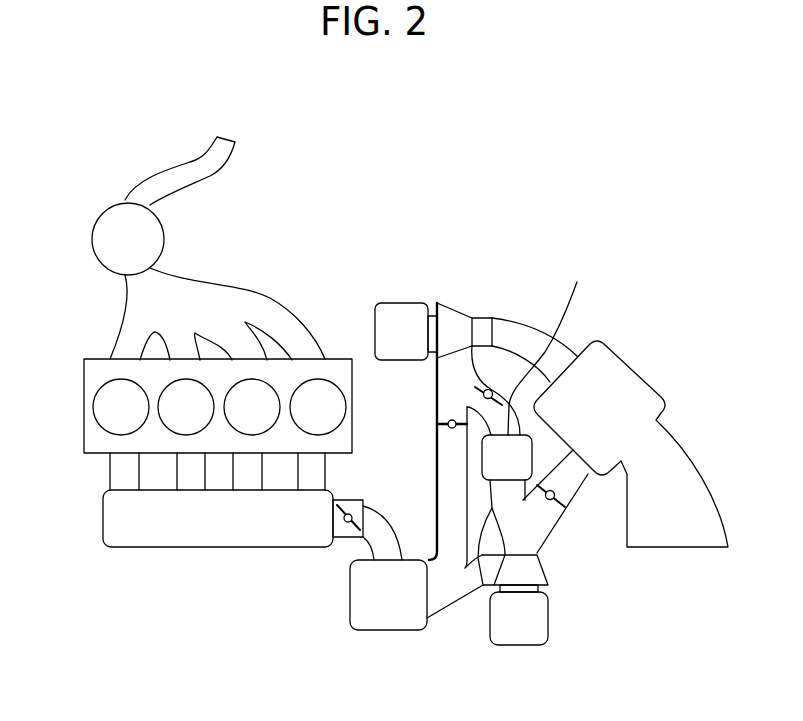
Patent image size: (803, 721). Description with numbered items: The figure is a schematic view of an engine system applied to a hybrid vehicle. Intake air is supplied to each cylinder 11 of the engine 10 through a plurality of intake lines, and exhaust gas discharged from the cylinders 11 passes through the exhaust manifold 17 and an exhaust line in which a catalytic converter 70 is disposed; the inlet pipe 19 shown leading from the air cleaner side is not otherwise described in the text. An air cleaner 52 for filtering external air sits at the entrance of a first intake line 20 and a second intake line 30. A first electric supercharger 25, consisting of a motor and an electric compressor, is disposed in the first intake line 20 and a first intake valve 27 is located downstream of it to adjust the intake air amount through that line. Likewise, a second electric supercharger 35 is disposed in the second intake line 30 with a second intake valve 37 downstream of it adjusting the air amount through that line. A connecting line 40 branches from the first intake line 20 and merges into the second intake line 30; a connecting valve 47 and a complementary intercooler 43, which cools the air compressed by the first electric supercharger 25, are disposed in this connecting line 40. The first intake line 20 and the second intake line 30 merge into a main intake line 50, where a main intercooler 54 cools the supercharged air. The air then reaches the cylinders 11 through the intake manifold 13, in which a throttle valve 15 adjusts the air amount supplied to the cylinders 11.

The engine 10 is at (79, 442).
The cylinder 11 is at (94, 409).
The intake manifold 13 is at (103, 518).
The throttle valve 15 is at (355, 500).
The exhaust manifold 17 is at (116, 346).
The intake line 19 is at (172, 163).
The first intake line 20 is at (526, 326).
The first electric supercharger 25 is at (431, 292).
The first intake valve 27 is at (437, 425).
The second intake line 30 is at (581, 485).
The second electric supercharger 35 is at (565, 598).
The second intake valve 37 is at (565, 508).
The connecting line 40 is at (488, 585).
The complementary intercooler 43 is at (539, 369).
The connecting valve 47 is at (487, 387).
The main intake line 50 is at (354, 550).
The air cleaner 52 is at (644, 366).
The main intercooler 54 is at (387, 631).
The catalytic converter 70 is at (92, 238).